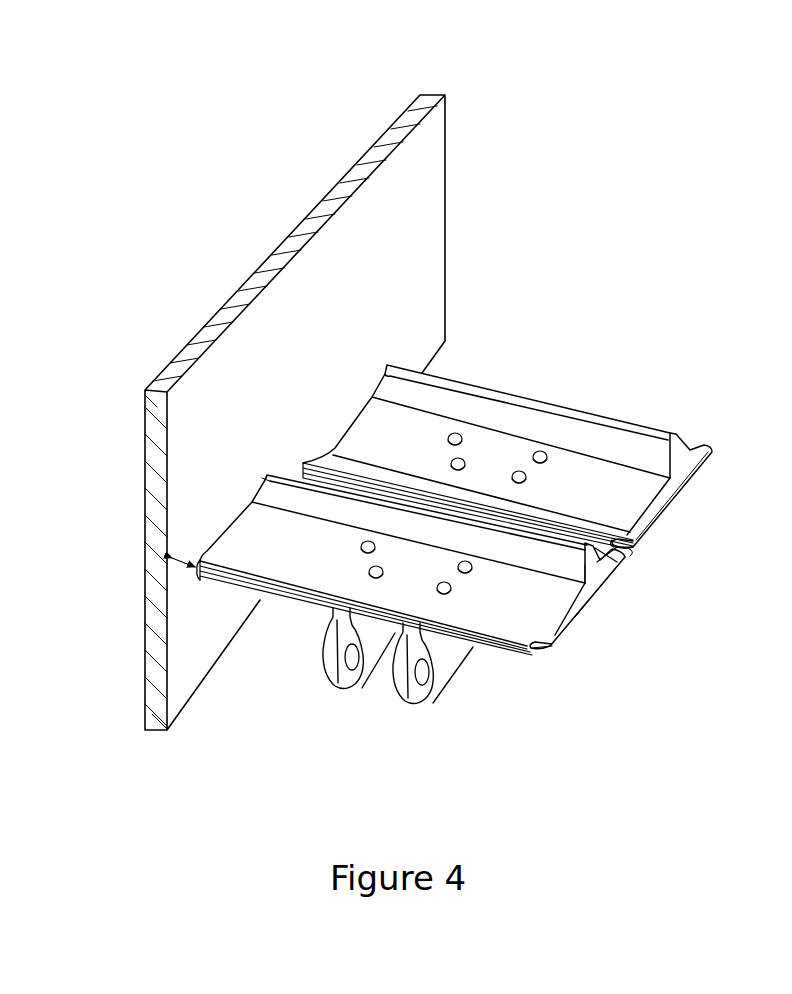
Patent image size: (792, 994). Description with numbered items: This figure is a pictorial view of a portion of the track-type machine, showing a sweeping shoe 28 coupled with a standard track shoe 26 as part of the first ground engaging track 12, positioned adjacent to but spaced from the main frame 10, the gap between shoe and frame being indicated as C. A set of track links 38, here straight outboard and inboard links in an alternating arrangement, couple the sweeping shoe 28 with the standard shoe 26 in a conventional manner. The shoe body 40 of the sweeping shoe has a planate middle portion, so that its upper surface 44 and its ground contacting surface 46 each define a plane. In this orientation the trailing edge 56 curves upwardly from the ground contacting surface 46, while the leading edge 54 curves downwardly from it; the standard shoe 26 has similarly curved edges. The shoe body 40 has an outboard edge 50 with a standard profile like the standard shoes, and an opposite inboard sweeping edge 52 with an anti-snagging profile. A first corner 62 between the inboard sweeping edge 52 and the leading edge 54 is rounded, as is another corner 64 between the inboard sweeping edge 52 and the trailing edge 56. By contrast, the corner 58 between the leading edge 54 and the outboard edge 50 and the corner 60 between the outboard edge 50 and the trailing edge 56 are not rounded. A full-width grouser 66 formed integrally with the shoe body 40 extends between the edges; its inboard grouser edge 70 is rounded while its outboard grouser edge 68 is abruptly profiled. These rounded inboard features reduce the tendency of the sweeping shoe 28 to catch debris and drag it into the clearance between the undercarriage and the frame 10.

The main frame 10 is at (150, 488).
The first ground engaging track 12 is at (722, 446).
The standard track shoe 26 is at (660, 528).
The sweeping shoe 28 is at (571, 633).
The track links 38 is at (398, 697).
The shoe body 40 is at (553, 649).
The upper shoe surface 44 is at (588, 609).
The ground contacting shoe surface 46 is at (546, 607).
The outboard edge 50 is at (590, 585).
The inboard sweeping edge 52 is at (234, 512).
The leading edge 54 is at (626, 540).
The trailing edge 56 is at (483, 651).
The corner 58 is at (637, 552).
The corner 60 is at (516, 652).
The first corner 62 is at (292, 469).
The corner 64 is at (200, 581).
The grouser 66 is at (284, 497).
The outboard grouser edge 68 is at (615, 559).
The inboard grouser edge 70 is at (272, 477).
The clearance gap C is at (184, 562).